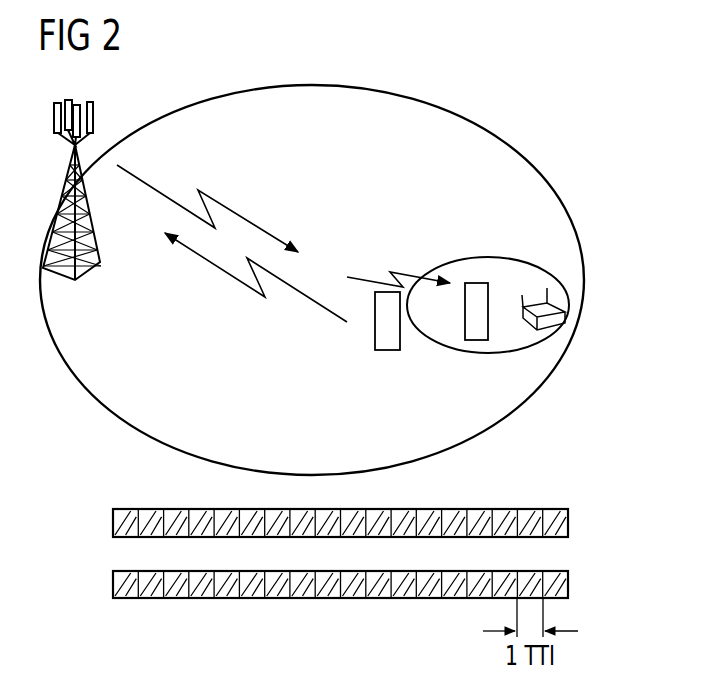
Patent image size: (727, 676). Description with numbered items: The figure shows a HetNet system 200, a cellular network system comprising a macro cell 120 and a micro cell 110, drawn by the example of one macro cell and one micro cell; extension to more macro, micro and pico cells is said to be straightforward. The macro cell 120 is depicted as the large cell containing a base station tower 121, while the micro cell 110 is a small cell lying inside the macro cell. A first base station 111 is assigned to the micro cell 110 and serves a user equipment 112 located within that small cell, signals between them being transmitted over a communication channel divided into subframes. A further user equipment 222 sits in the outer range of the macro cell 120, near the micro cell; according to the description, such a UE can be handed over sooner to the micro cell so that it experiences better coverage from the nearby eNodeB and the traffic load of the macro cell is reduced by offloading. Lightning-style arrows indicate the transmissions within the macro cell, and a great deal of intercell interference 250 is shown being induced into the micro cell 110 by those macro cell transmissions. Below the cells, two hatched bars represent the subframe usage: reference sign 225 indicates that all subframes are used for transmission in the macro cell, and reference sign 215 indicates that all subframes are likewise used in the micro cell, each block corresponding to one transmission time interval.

The HetNet system 200 is at (552, 132).
The macro cell 120 is at (560, 197).
The base station 121 is at (88, 273).
The intercell interference 250 is at (400, 285).
The user equipment 222 is at (387, 350).
The micro cell 110 is at (482, 353).
The user equipment 112 is at (475, 283).
The first base station 111 is at (565, 300).
The subframes of the macro cell 225 is at (568, 520).
The subframes of the micro cell 215 is at (568, 585).